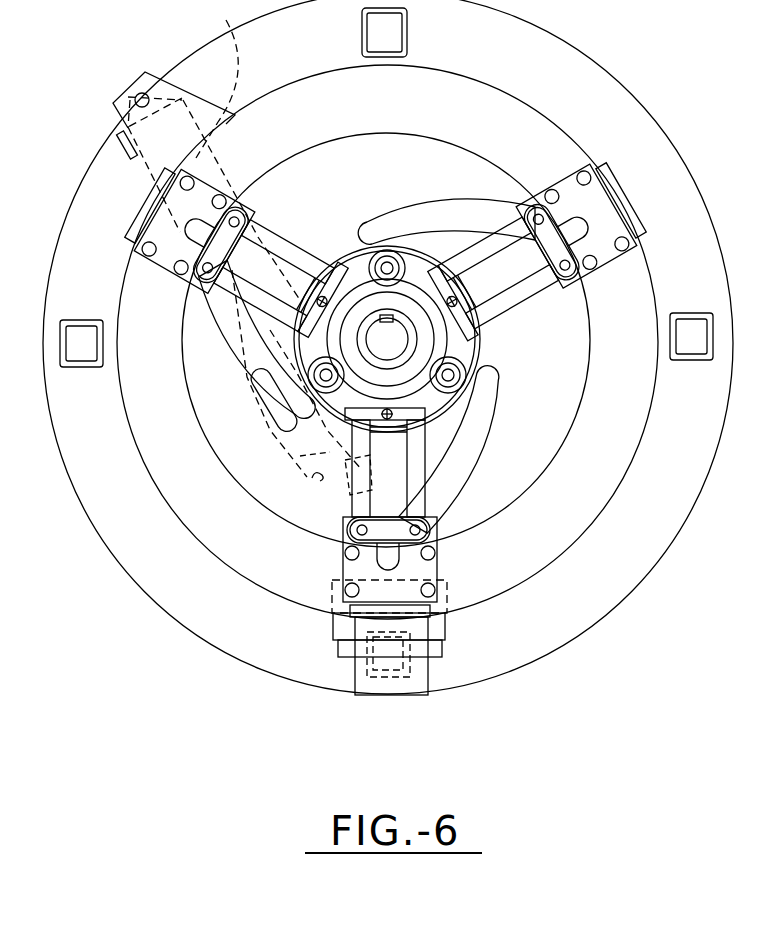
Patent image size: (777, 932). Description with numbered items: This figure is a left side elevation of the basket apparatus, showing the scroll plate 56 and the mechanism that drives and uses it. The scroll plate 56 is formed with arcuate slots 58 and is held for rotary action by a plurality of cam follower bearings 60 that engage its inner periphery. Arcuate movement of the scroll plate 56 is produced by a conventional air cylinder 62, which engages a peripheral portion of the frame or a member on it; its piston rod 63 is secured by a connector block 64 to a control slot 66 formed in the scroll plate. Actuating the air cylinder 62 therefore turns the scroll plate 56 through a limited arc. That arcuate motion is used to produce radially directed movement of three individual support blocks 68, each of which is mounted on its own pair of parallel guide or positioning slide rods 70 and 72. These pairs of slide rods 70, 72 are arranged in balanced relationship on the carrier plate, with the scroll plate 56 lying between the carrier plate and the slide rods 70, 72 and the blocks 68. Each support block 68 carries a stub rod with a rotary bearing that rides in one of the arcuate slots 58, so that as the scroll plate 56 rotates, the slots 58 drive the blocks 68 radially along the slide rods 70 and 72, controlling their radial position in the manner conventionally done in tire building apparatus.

The scroll plate 56 is at (548, 443).
The arcuate slots 58 is at (400, 210).
The cam follower bearings 60 is at (372, 255).
The air cylinder 62 is at (238, 26).
The piston rod 63 is at (300, 457).
The connector block 64 is at (352, 493).
The control slot 66 is at (312, 482).
The support blocks 68 is at (170, 273).
The slide rod 70 is at (500, 237).
The slide rod 72 is at (271, 232).